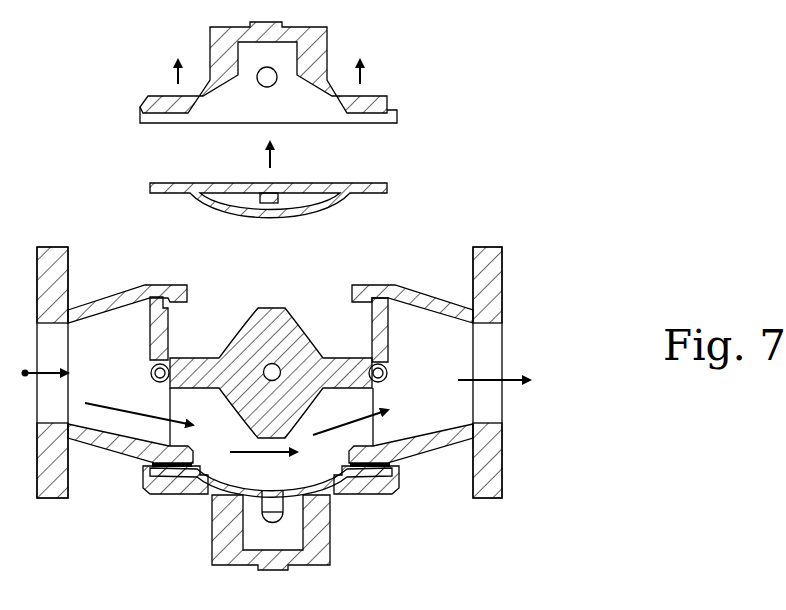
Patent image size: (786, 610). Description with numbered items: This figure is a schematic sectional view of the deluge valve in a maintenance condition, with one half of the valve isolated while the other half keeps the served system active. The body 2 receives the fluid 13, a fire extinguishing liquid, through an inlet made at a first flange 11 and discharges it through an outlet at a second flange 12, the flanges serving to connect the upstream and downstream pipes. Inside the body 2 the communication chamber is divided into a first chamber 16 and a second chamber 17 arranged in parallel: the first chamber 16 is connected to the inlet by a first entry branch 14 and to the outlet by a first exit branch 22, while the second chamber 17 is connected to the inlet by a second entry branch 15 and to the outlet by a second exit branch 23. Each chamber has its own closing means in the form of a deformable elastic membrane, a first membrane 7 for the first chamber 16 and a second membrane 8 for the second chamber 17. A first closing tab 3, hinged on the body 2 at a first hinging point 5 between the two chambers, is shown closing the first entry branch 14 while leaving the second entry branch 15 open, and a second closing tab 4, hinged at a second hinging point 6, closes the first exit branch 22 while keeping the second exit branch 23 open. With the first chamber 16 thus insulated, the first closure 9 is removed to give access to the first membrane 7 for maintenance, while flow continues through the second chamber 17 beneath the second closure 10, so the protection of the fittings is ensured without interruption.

The body 2 is at (270, 395).
The first closing tab 3 is at (160, 325).
The second closing tab 4 is at (375, 327).
The first hinging point 5 is at (167, 365).
The second hinging point 6 is at (372, 367).
The first closing means 7 is at (378, 190).
The second closing means 8 is at (197, 472).
The first closure 9 is at (386, 98).
The second closure 10 is at (322, 553).
The first flange 11 is at (57, 252).
The second flange 12 is at (490, 252).
The fluid 13 is at (25, 373).
The first entry branch 14 is at (120, 325).
The second entry branch 15 is at (130, 423).
The first chamber 16 is at (238, 312).
The second chamber 17 is at (333, 452).
The first exit branch 22 is at (428, 327).
The second exit branch 23 is at (397, 427).